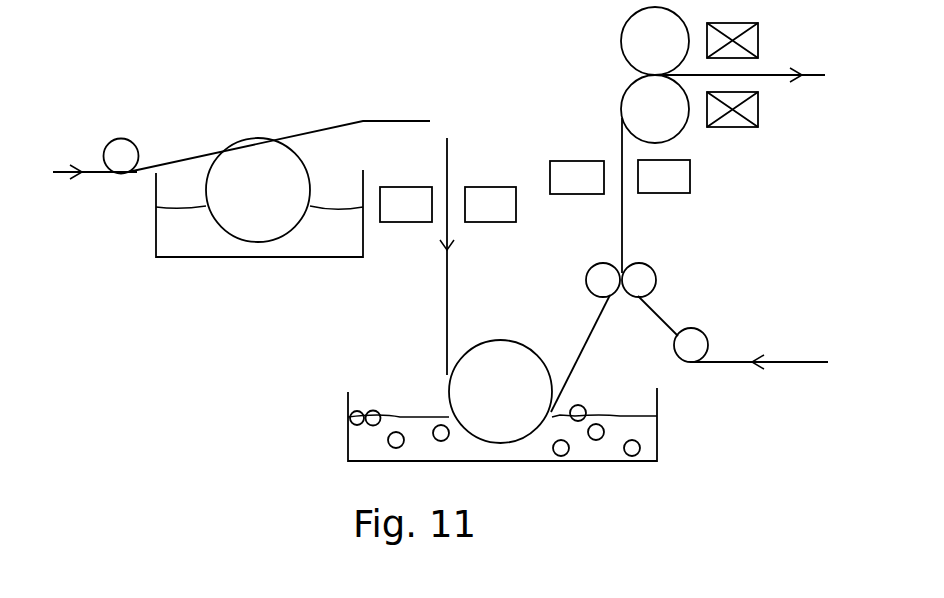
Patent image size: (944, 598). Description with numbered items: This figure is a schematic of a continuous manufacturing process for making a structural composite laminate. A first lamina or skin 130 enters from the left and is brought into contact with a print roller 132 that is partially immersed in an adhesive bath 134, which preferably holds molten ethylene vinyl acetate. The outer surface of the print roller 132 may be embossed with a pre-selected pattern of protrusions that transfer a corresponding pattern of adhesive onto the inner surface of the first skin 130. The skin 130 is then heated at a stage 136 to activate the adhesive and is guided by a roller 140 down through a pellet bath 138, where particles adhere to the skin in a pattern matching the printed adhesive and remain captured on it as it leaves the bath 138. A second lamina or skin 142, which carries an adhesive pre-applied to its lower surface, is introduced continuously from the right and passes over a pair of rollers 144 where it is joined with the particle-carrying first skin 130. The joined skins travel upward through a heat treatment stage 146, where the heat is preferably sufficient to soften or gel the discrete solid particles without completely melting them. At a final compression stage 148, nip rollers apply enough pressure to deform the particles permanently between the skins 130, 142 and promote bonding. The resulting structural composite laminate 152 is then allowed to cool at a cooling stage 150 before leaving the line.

The first lamina or skin 130 is at (92, 172).
The print roller 132 is at (260, 155).
The adhesive bath 134 is at (173, 240).
The heating stage 136 is at (482, 203).
The pellet bath 138 is at (363, 443).
The roller 140 is at (500, 357).
The second lamina or skin 142 is at (760, 362).
The nip rollers 144 is at (638, 279).
The heat treatment stage 146 is at (673, 178).
The final compression stage 148 is at (640, 52).
The cooling stage 150 is at (722, 110).
The structural composite laminate 152 is at (810, 75).